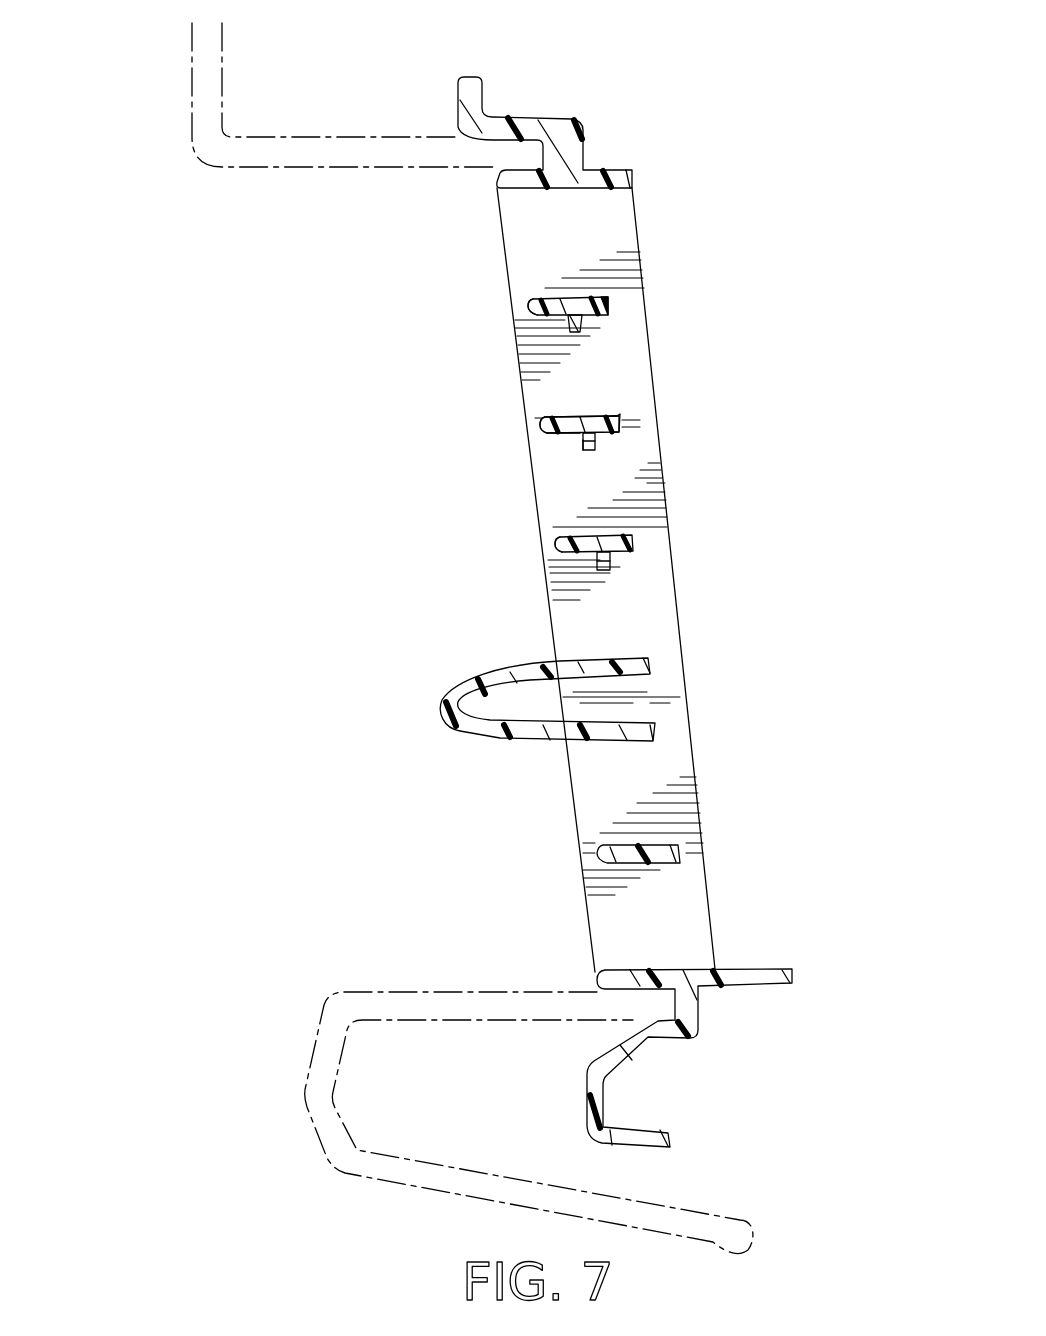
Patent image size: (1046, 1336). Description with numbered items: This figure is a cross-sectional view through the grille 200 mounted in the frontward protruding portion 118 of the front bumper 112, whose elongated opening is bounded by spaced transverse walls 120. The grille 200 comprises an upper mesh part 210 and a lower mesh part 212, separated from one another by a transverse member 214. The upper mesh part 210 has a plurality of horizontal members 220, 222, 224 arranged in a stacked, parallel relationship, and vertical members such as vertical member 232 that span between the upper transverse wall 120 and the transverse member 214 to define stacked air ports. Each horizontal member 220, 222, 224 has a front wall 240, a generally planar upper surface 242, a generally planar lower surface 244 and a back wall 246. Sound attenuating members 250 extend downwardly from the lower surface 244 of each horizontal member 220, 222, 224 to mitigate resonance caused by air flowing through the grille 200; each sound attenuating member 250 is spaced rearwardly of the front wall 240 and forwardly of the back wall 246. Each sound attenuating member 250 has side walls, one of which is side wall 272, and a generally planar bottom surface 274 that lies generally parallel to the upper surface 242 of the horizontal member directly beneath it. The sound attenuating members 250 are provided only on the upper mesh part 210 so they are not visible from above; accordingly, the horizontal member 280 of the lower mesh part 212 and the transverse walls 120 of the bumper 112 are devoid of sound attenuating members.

The bumper 112 is at (184, 110).
The frontward protruding portion 118 is at (305, 1120).
The transverse walls 120 is at (497, 187).
The grille 200 is at (240, 258).
The upper mesh part 210 is at (450, 287).
The lower mesh part 212 is at (505, 842).
The transverse member 214 is at (440, 716).
The horizontal member 220 is at (638, 528).
The horizontal member 222 is at (616, 413).
The horizontal member 224 is at (614, 290).
The vertical member 232 is at (660, 622).
The front wall 240 is at (528, 307).
The upper surface 242 is at (568, 418).
The lower surface 244 is at (570, 434).
The back wall 246 is at (620, 433).
The sound attenuating member 250 is at (568, 324).
The side wall 272 is at (596, 446).
The bottom surface 274 is at (583, 450).
The horizontal member 280 is at (660, 845).